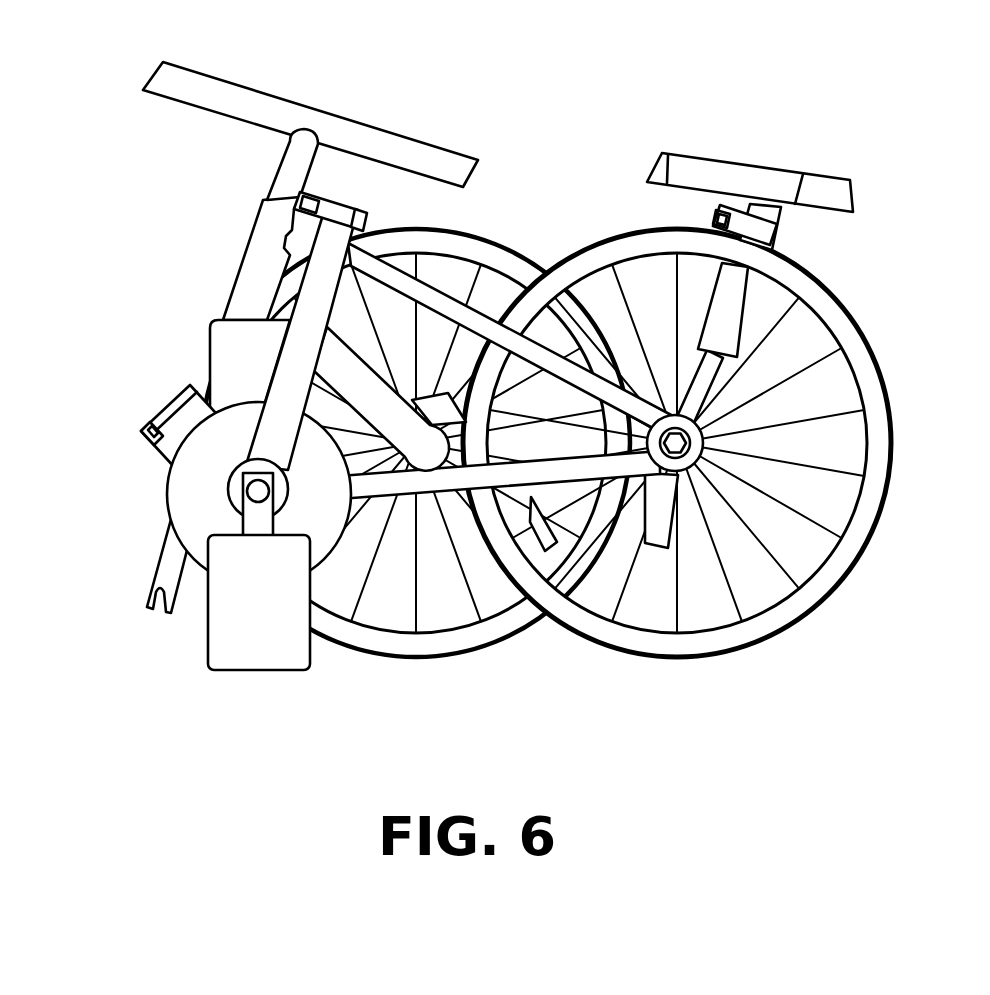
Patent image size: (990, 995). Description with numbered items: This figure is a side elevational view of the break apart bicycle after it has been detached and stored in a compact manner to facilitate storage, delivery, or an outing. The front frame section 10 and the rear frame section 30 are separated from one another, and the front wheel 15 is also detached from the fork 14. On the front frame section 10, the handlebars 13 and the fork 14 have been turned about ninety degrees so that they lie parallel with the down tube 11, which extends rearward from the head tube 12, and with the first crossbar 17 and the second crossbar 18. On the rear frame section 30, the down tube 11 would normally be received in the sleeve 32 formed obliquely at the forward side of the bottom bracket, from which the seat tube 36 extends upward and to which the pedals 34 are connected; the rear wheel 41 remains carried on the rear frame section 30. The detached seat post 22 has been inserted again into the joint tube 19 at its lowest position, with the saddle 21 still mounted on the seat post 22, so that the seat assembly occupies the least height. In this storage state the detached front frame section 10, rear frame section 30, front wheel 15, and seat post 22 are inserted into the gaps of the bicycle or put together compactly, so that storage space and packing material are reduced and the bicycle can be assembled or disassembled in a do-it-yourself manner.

The front frame section 10 is at (515, 405).
The down tube 11 is at (535, 616).
The head tube 12 is at (257, 263).
The handlebars 13 is at (365, 123).
The fork 14 is at (173, 565).
The front wheel 15 is at (480, 240).
The first crossbar 17 is at (726, 418).
The second crossbar 18 is at (500, 308).
The joint tube 19 is at (750, 300).
The saddle 21 is at (752, 172).
The seat post 22 is at (648, 556).
The rear frame section 30 is at (232, 483).
The sleeve 32 is at (207, 462).
The pedals 34 is at (222, 642).
The seat tube 36 is at (297, 360).
The rear wheel 41 is at (893, 421).